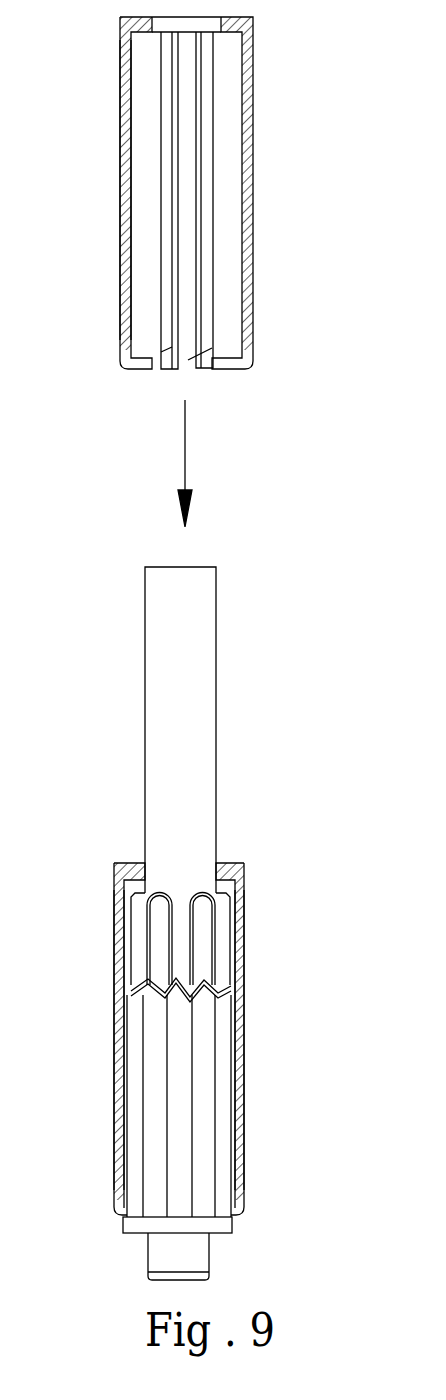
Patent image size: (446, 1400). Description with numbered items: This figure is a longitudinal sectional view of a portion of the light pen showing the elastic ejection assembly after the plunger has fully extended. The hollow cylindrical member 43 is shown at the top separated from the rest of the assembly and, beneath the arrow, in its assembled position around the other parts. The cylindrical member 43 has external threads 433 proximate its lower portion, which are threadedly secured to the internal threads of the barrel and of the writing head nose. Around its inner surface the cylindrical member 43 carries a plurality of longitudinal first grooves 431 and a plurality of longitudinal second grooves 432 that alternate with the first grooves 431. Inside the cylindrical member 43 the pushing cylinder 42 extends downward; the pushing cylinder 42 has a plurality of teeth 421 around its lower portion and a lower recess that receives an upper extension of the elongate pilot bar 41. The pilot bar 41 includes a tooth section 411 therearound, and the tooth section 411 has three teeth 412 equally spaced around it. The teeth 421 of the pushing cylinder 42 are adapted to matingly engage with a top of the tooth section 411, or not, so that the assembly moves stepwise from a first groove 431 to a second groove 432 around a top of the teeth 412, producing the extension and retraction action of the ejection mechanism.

The pilot bar 41 is at (232, 1226).
The tooth section 411 is at (155, 993).
The teeth 412 is at (135, 1175).
The pushing cylinder 42 is at (208, 728).
The teeth 421 is at (231, 991).
The hollow cylindrical member 43 is at (248, 192).
The first grooves 431 is at (163, 203).
The second grooves 432 is at (136, 281).
The external threads 433 is at (246, 1079).